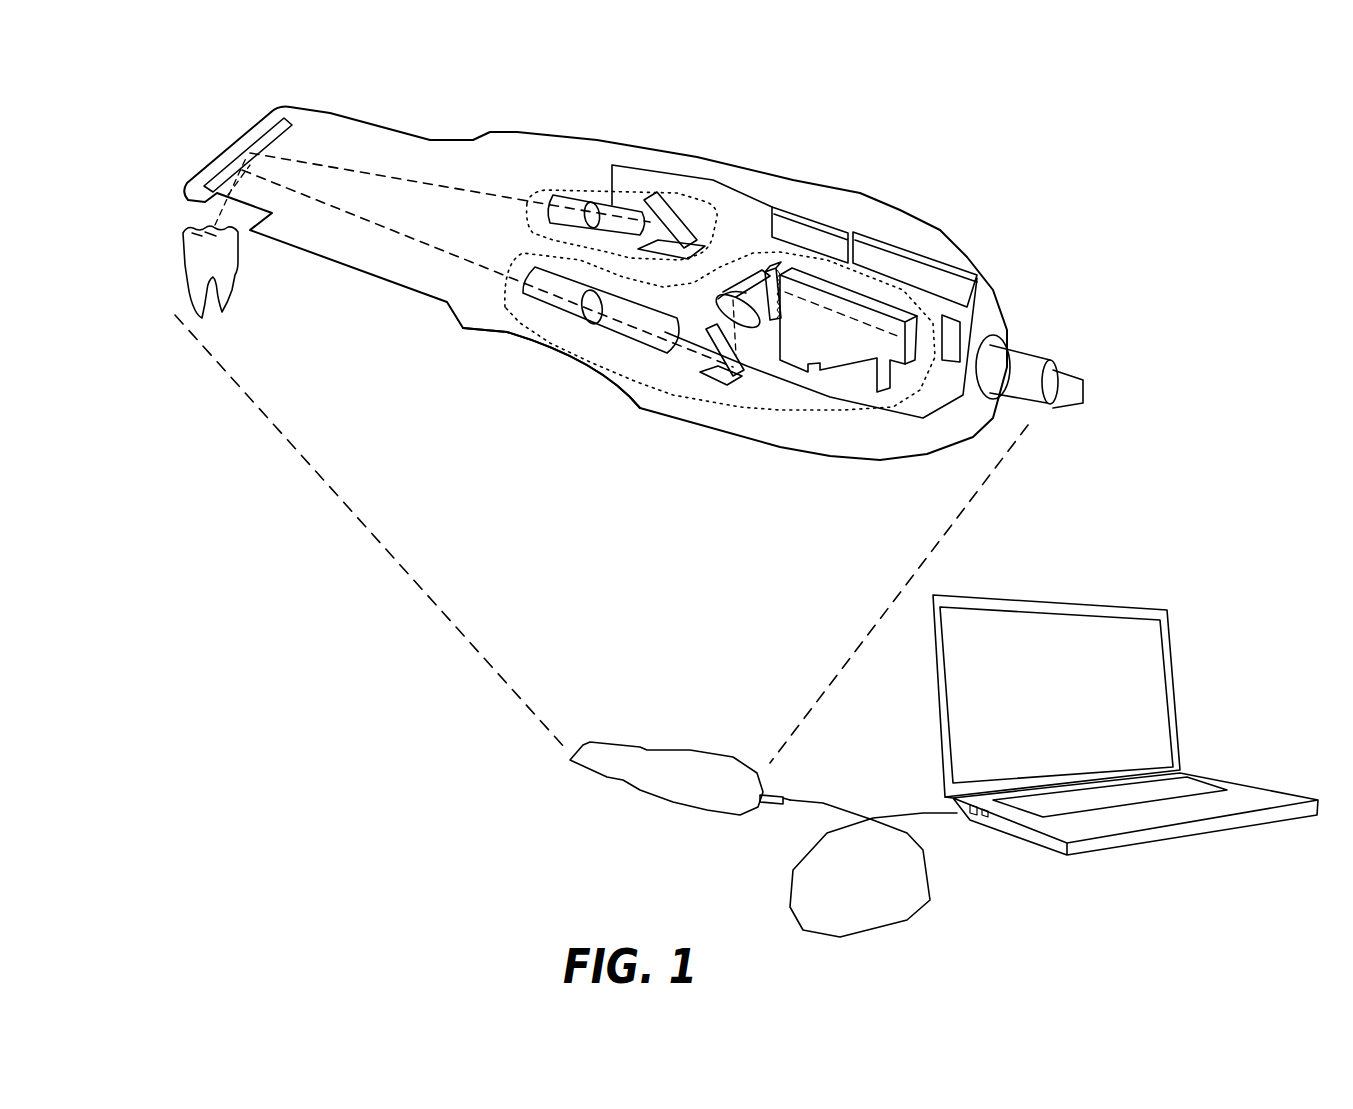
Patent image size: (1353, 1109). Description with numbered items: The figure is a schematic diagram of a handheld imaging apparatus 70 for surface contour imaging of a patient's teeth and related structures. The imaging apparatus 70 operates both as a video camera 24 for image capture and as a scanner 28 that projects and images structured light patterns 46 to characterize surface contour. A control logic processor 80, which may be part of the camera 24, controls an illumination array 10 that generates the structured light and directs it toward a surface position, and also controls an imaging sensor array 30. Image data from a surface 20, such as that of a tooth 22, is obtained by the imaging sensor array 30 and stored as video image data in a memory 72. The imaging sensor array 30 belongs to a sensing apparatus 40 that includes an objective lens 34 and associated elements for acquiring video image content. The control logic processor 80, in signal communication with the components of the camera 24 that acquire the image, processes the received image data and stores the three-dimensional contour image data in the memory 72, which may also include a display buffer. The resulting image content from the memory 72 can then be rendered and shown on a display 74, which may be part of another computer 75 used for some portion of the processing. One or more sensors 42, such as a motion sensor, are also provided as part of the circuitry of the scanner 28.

The illumination array 10 is at (740, 410).
The surface 20 is at (177, 230).
The tooth 22 is at (202, 277).
The video camera 24 is at (913, 215).
The scanner 28 is at (527, 385).
The imaging sensor array 30 is at (700, 240).
The objective lens 34 is at (598, 293).
The sensing apparatus 40 is at (677, 197).
The sensor 42 is at (967, 333).
The structured light patterns 46 is at (380, 175).
The imaging apparatus 70 is at (674, 864).
The memory 72 is at (834, 252).
The display 74 is at (1029, 692).
The computer 75 is at (1248, 788).
The control logic processor 80 is at (917, 280).